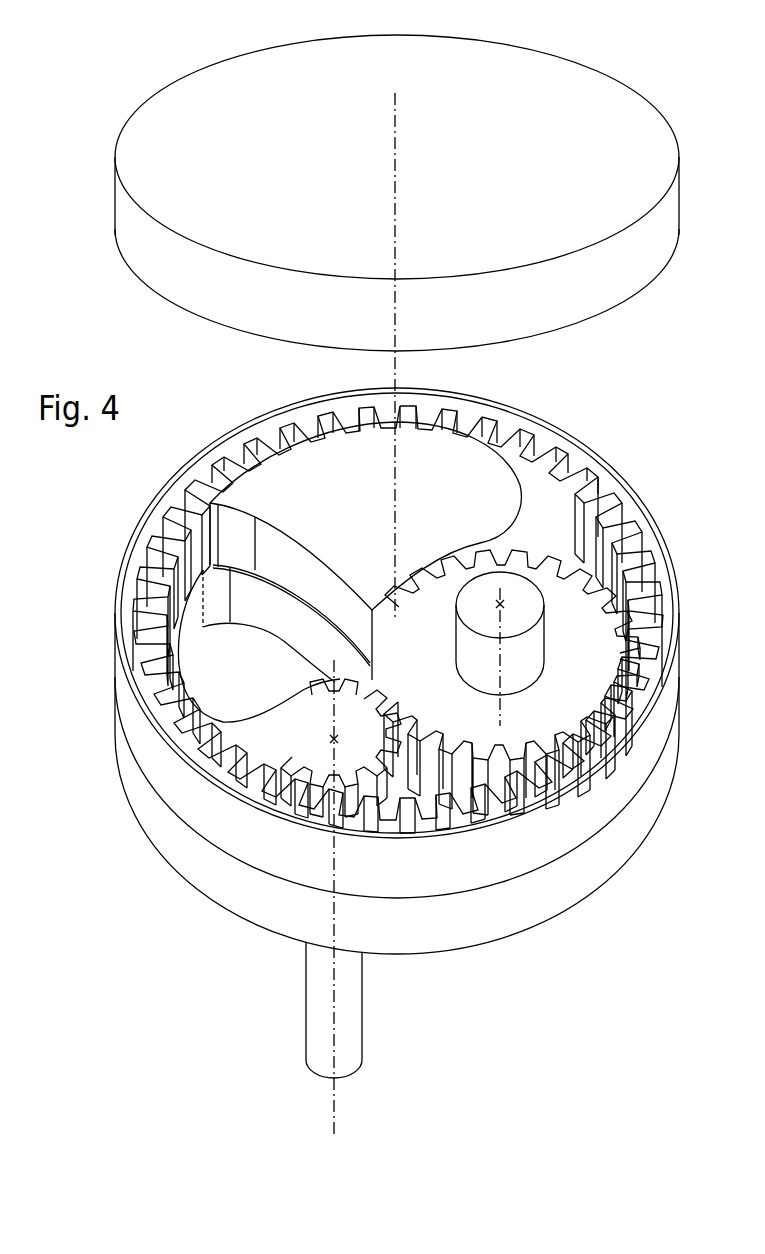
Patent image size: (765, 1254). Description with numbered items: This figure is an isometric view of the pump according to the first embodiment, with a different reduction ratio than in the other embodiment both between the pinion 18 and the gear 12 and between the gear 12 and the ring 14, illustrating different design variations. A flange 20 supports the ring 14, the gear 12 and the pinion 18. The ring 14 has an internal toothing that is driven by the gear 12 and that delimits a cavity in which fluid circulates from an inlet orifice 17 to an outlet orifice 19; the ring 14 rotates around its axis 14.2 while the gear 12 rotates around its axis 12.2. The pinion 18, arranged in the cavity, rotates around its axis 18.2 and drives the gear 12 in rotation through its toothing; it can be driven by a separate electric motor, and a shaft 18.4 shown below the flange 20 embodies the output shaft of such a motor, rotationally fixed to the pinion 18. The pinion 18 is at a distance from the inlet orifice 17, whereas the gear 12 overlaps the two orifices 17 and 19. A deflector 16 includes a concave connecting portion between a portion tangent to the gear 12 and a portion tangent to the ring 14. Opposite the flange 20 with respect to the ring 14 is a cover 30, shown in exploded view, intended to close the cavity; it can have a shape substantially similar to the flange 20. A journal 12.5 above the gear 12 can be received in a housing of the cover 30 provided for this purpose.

The cover 30 is at (561, 226).
The axis of the ring 14.2 is at (397, 190).
The ring 14 is at (534, 862).
The flange 20 is at (534, 923).
The outlet orifice 19 is at (545, 557).
The deflector 16 is at (349, 507).
The inlet orifice 17 is at (277, 678).
The gear 12 is at (581, 669).
The journal 12.5 is at (541, 669).
The axis of the gear 12.2 is at (497, 712).
The pinion 18 is at (370, 751).
The axis of the pinion 18.2 is at (334, 1020).
The shaft 18.4 is at (362, 1022).